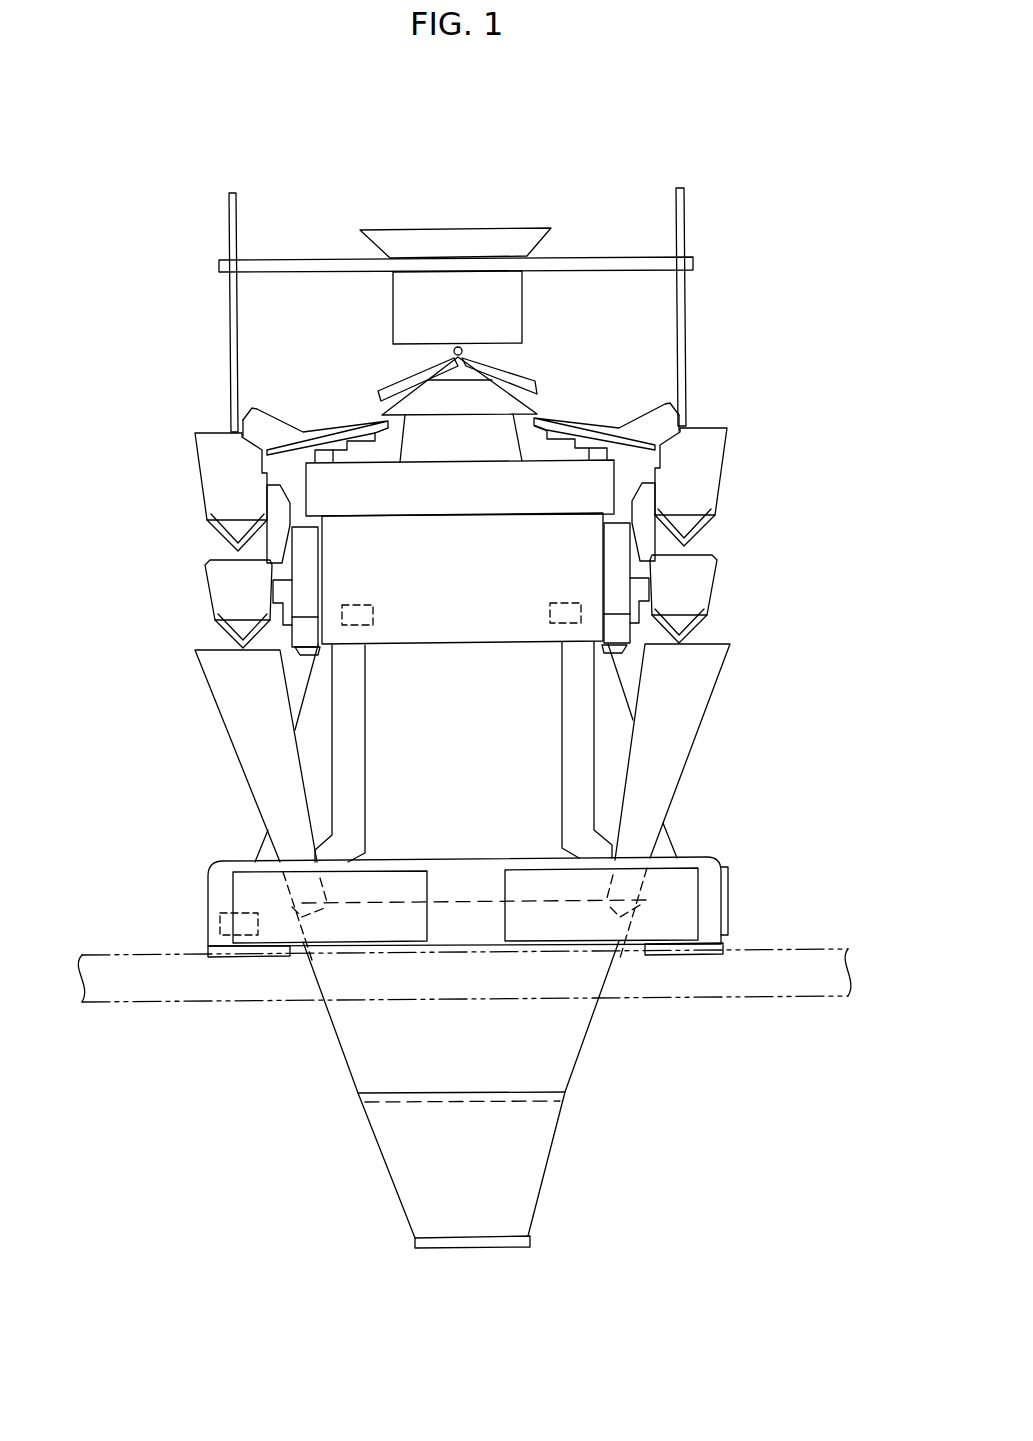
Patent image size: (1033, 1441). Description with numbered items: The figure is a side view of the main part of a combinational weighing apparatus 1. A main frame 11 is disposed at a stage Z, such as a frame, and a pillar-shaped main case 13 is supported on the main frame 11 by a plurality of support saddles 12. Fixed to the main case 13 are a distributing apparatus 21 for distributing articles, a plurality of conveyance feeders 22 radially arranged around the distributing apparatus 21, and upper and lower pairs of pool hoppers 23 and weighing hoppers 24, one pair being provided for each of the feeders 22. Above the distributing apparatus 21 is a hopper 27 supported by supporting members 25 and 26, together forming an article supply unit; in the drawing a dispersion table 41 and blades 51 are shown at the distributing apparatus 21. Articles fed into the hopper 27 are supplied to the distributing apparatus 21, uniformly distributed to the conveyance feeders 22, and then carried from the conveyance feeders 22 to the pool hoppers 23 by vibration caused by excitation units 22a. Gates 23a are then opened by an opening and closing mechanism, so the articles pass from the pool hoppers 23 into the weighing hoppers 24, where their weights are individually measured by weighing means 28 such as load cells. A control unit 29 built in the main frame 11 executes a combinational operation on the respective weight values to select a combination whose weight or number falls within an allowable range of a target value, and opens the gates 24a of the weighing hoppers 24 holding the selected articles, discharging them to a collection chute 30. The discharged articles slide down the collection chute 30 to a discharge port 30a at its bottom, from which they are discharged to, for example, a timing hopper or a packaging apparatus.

The combinational weighing apparatus 1 is at (762, 185).
The main frame 11 is at (700, 857).
The support saddles 12 is at (365, 748).
The main case 13 is at (428, 636).
The distributing apparatus 21 is at (476, 398).
The conveyance feeders 22 is at (305, 428).
The excitation units 22a is at (360, 443).
The pool hoppers 23 is at (198, 475).
The gates 23a is at (208, 533).
The weighing hoppers 24 is at (203, 582).
The gates 24a is at (223, 635).
The supporting members 25 is at (237, 222).
The supporting member 26 is at (272, 261).
The hopper 27 is at (525, 229).
The weighing means 28 is at (354, 604).
The control unit 29 is at (227, 910).
The collection chute 30 is at (203, 680).
The discharge port 30a is at (477, 1248).
The dispersion table 41 is at (542, 407).
The scraper blades 51 is at (540, 384).
The stage Z is at (796, 945).